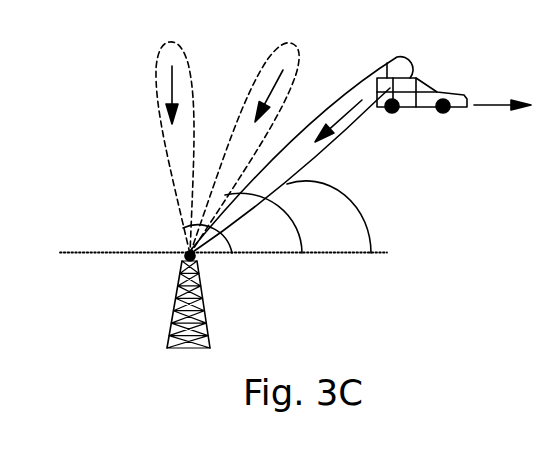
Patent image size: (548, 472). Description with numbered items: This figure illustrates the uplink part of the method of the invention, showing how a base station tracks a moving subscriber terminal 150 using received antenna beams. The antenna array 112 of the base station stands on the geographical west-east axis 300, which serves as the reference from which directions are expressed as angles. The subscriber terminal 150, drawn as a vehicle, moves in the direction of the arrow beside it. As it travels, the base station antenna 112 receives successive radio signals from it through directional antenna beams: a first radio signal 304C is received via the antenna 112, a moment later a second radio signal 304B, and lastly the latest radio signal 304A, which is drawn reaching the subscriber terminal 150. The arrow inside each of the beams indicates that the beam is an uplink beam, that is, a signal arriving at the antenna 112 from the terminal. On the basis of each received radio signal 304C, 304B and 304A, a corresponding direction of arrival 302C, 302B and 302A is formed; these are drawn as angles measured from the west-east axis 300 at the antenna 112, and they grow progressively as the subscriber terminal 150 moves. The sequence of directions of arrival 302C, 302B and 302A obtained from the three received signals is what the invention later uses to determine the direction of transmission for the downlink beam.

The geographical west-east axis 300 is at (60, 252).
The antenna array 112 is at (205, 307).
The first radio signal 304C is at (178, 42).
The second radio signal 304B is at (272, 69).
The latest radio signal 304A is at (411, 76).
The subscriber terminal 150 is at (463, 96).
The direction of arrival 302A is at (338, 214).
The direction of arrival 302B is at (283, 223).
The direction of arrival 302C is at (232, 239).